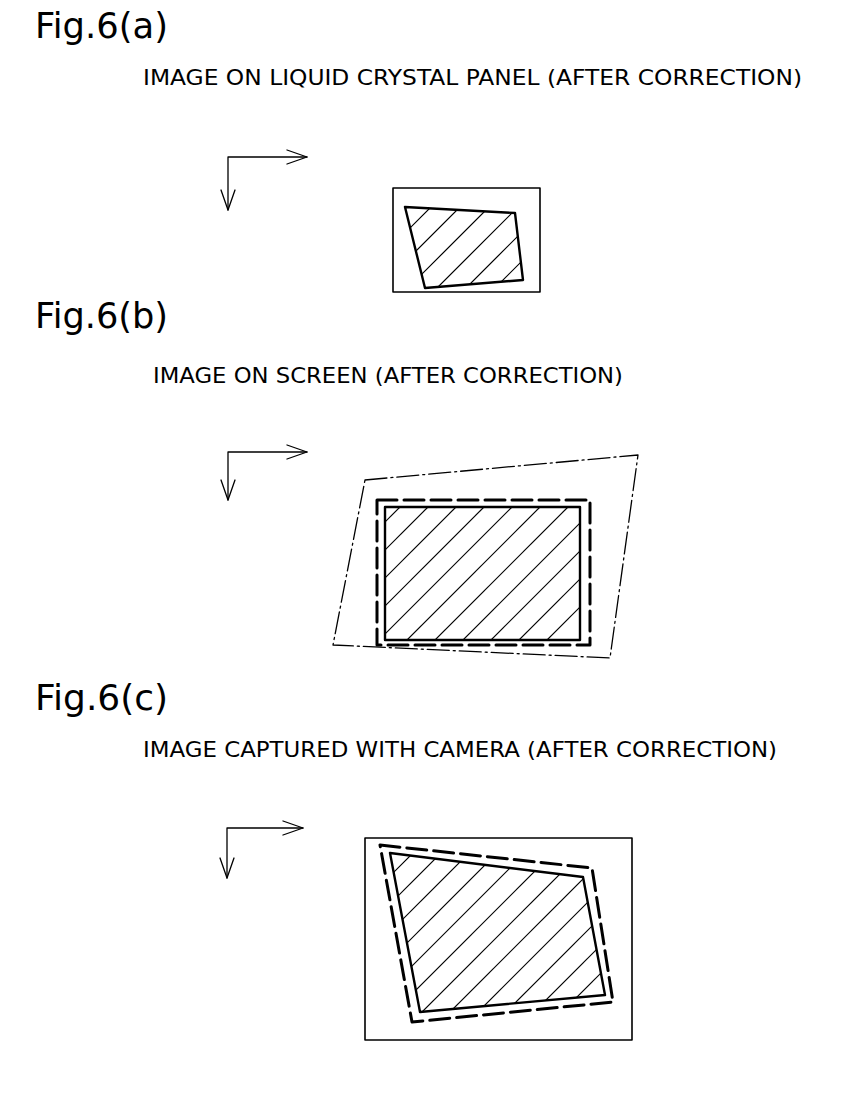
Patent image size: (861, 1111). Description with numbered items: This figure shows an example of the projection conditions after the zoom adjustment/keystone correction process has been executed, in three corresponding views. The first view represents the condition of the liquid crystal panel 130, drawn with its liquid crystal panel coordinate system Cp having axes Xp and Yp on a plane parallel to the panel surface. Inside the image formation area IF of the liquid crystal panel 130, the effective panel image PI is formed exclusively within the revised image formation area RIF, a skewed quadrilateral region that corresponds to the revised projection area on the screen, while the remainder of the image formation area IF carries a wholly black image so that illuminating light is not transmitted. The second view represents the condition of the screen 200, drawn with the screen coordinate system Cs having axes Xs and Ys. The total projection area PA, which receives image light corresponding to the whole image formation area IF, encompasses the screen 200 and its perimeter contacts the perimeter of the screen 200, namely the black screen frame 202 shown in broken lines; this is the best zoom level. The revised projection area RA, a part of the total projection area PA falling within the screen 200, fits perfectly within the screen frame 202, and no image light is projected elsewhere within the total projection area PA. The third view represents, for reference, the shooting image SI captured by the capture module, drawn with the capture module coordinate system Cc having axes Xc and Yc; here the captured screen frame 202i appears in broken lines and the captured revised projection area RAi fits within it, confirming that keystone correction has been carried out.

In FIG. 6A, the liquid crystal panel 130 is at (369, 233).
In FIG. 6A, the image formation area IF is at (540, 202).
In FIG. 6A, the effective panel image PI is at (497, 238).
In FIG. 6A, the revised image formation area RIF is at (523, 263).
In FIG. 6A, the liquid crystal panel coordinate system Cp is at (242, 171).
In FIG. 6A, the Xp axis of liquid crystal panel coordinate system Xp is at (309, 146).
In FIG. 6A, the Yp axis of liquid crystal panel coordinate system Yp is at (219, 217).
In FIG. 6B, the screen 200 is at (366, 585).
In FIG. 6B, the total projection area PA is at (597, 455).
In FIG. 6B, the screen frame 202 is at (590, 523).
In FIG. 6B, the revised projection area RA is at (580, 597).
In FIG. 6B, the screen coordinate system Cs is at (242, 463).
In FIG. 6B, the Xs axis of screen coordinate system Xs is at (308, 440).
In FIG. 6B, the Ys axis of screen coordinate system Ys is at (218, 505).
In FIG. 6C, the shooting image SI is at (340, 927).
In FIG. 6C, the screen frame on the image 202i is at (613, 905).
In FIG. 6C, the revised projection area on the image RAi is at (605, 960).
In FIG. 6C, the capture module coordinate system Cc is at (240, 841).
In FIG. 6C, the Xc axis of capture module coordinate system Xc is at (305, 816).
In FIG. 6C, the Yc axis of capture module coordinate system Yc is at (218, 883).